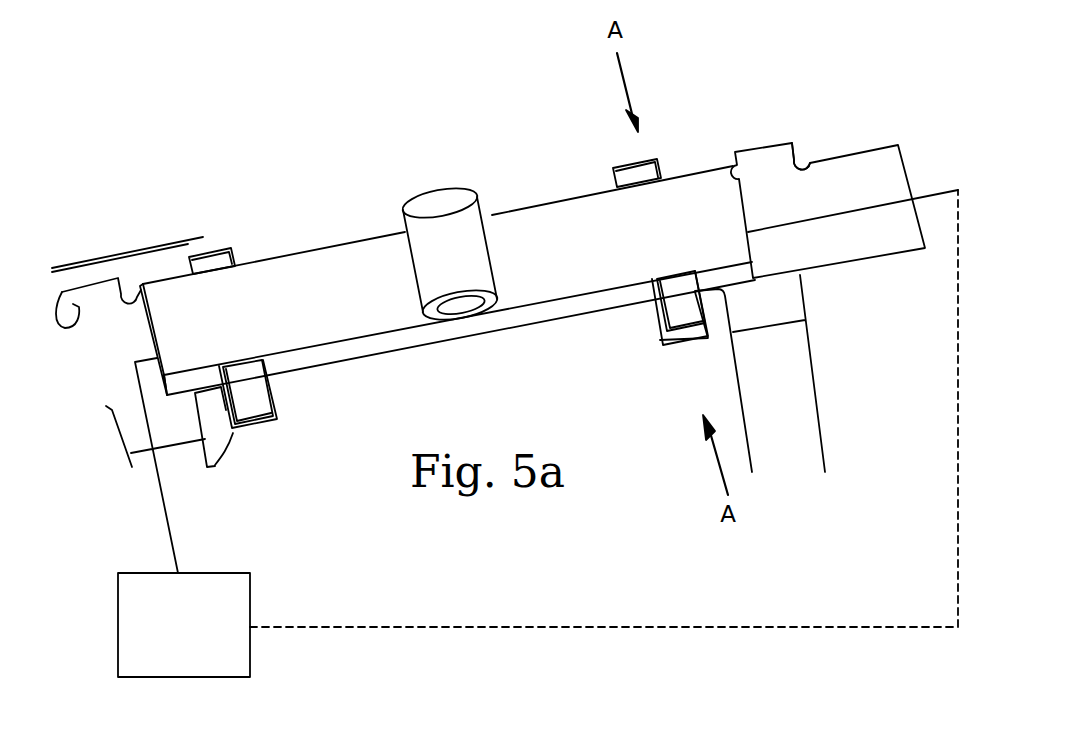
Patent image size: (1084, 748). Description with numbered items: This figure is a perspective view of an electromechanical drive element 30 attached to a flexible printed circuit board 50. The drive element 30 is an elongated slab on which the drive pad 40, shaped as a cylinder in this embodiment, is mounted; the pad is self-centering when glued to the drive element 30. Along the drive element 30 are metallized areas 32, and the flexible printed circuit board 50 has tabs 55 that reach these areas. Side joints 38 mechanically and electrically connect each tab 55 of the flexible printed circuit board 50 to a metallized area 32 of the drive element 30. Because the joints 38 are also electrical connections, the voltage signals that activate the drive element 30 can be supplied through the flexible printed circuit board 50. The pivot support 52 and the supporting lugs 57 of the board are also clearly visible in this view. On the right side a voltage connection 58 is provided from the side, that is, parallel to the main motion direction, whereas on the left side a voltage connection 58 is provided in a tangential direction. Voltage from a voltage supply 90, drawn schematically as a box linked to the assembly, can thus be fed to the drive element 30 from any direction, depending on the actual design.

The electromechanical drive element 30 is at (318, 250).
The metallized area 32 is at (231, 367).
The side joint 38 is at (212, 265).
The drive pad 40 is at (457, 208).
The flexible printed circuit board 50 is at (836, 255).
The pivot support 52 is at (243, 428).
The tab 55 is at (232, 252).
The supporting lug 57 is at (763, 153).
The voltage connection 58 is at (837, 213).
The voltage supply 90 is at (248, 640).